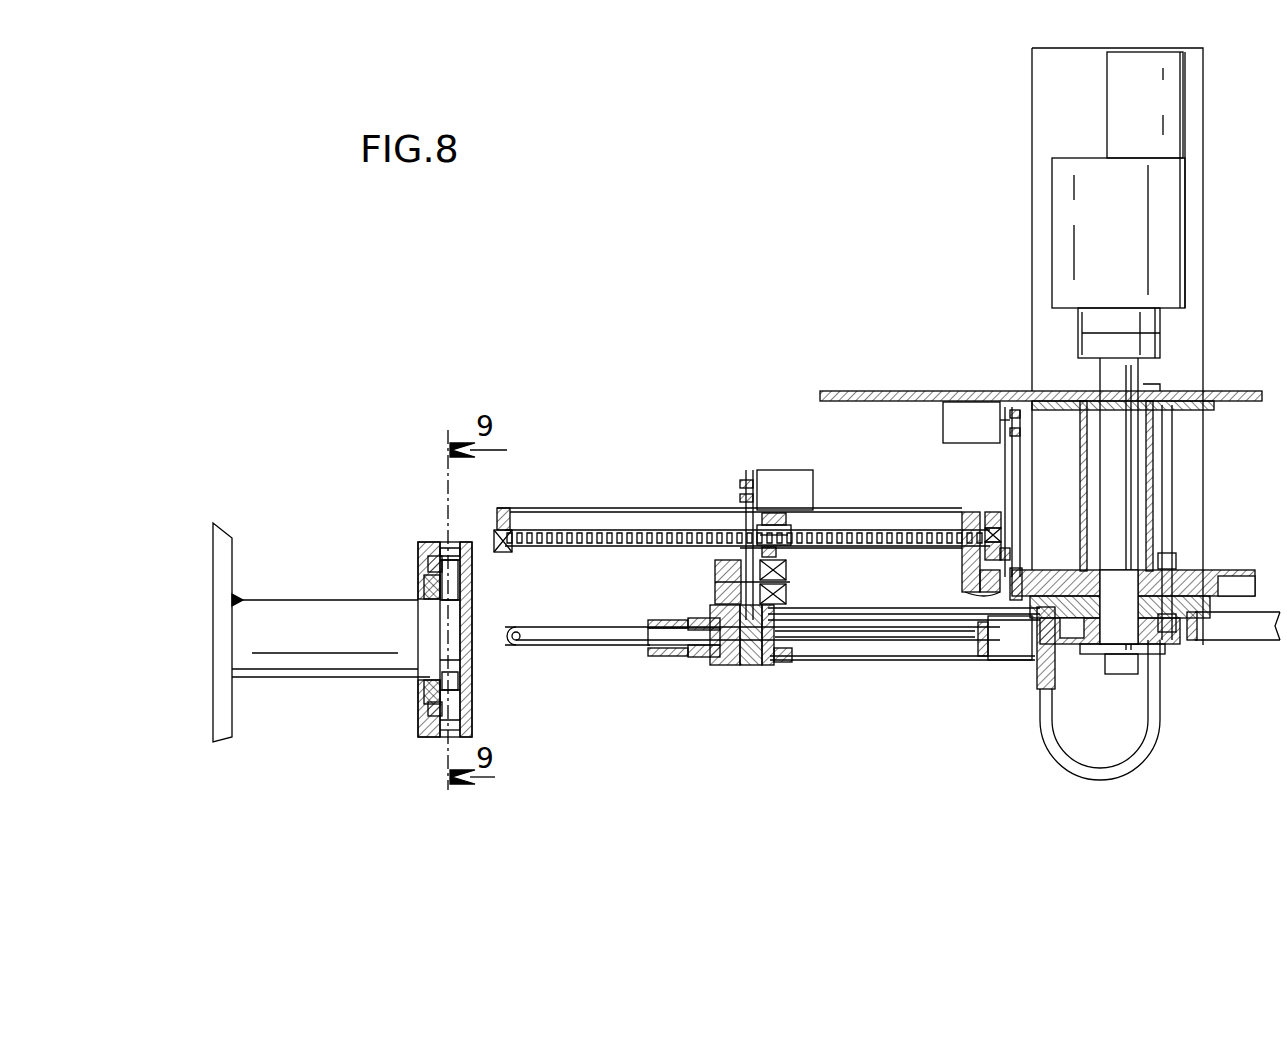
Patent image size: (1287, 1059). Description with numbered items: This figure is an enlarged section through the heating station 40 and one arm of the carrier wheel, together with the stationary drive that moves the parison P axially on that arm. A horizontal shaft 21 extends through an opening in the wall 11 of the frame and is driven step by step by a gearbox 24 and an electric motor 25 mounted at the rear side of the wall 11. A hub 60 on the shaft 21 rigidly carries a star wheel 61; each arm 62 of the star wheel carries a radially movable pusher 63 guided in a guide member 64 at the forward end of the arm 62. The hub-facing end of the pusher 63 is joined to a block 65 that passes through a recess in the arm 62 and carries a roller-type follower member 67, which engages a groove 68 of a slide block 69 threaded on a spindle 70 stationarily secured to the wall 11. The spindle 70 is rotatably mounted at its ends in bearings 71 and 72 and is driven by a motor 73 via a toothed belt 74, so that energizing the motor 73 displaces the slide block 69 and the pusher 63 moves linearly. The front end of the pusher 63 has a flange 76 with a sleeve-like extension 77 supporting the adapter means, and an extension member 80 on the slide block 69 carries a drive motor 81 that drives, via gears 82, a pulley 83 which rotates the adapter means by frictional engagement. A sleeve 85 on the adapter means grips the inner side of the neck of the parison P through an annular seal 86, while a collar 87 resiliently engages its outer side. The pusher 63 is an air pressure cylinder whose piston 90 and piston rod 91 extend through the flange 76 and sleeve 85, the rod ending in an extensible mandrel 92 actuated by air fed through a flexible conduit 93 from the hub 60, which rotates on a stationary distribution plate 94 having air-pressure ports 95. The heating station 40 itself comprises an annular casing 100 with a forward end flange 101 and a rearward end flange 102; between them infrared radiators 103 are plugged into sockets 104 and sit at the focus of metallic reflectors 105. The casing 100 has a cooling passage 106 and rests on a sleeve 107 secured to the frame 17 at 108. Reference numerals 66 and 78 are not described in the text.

The frame 17 is at (220, 550).
The sleeve 107 is at (322, 682).
The securing point 108 is at (242, 600).
The heating station 40 is at (412, 732).
The annular casing 100 is at (443, 544).
The rearward end flange 102 is at (423, 557).
The infrared radiators 103 is at (420, 580).
The forward end flange 101 is at (466, 562).
The metallic reflectors 105 is at (452, 687).
The sockets 104 is at (428, 706).
The cooling passage 106 is at (433, 738).
The extension member 80 is at (845, 508).
The spindle 70 is at (905, 545).
The bearing 71 is at (497, 512).
The gears 82 is at (742, 480).
The pulley 83 is at (745, 558).
The drive motor 81 is at (785, 513).
The arm 62 is at (788, 600).
The tube 66 is at (866, 610).
The pusher 63 is at (860, 662).
The extensible mandrel 92 is at (568, 630).
The parison P is at (560, 650).
The annular seal 86 is at (655, 656).
The collar 87 is at (668, 658).
The sleeve 85 is at (690, 660).
The sleeve-like extension 77 is at (716, 668).
The bushing 78 is at (738, 668).
The flange 76 is at (760, 668).
The guide member 64 is at (772, 666).
The piston rod 91 is at (940, 642).
The piston 90 is at (980, 658).
The block 65 is at (1022, 662).
The groove 68 is at (978, 576).
The follower member 67 is at (968, 592).
The bearing 72 is at (1005, 520).
The toothed belt 74 is at (1012, 470).
The slide block 69 is at (1020, 565).
The motor 73 is at (976, 422).
The wall 11 is at (865, 445).
The electric motor 25 is at (1170, 237).
The gearbox 24 is at (1140, 325).
The horizontal shaft 21 is at (1125, 372).
The air-pressure ports 95 is at (1172, 452).
The distribution plate 94 is at (1175, 582).
The star wheel 61 is at (1200, 622).
The hub 60 is at (1150, 644).
The flexible conduit 93 is at (1170, 735).